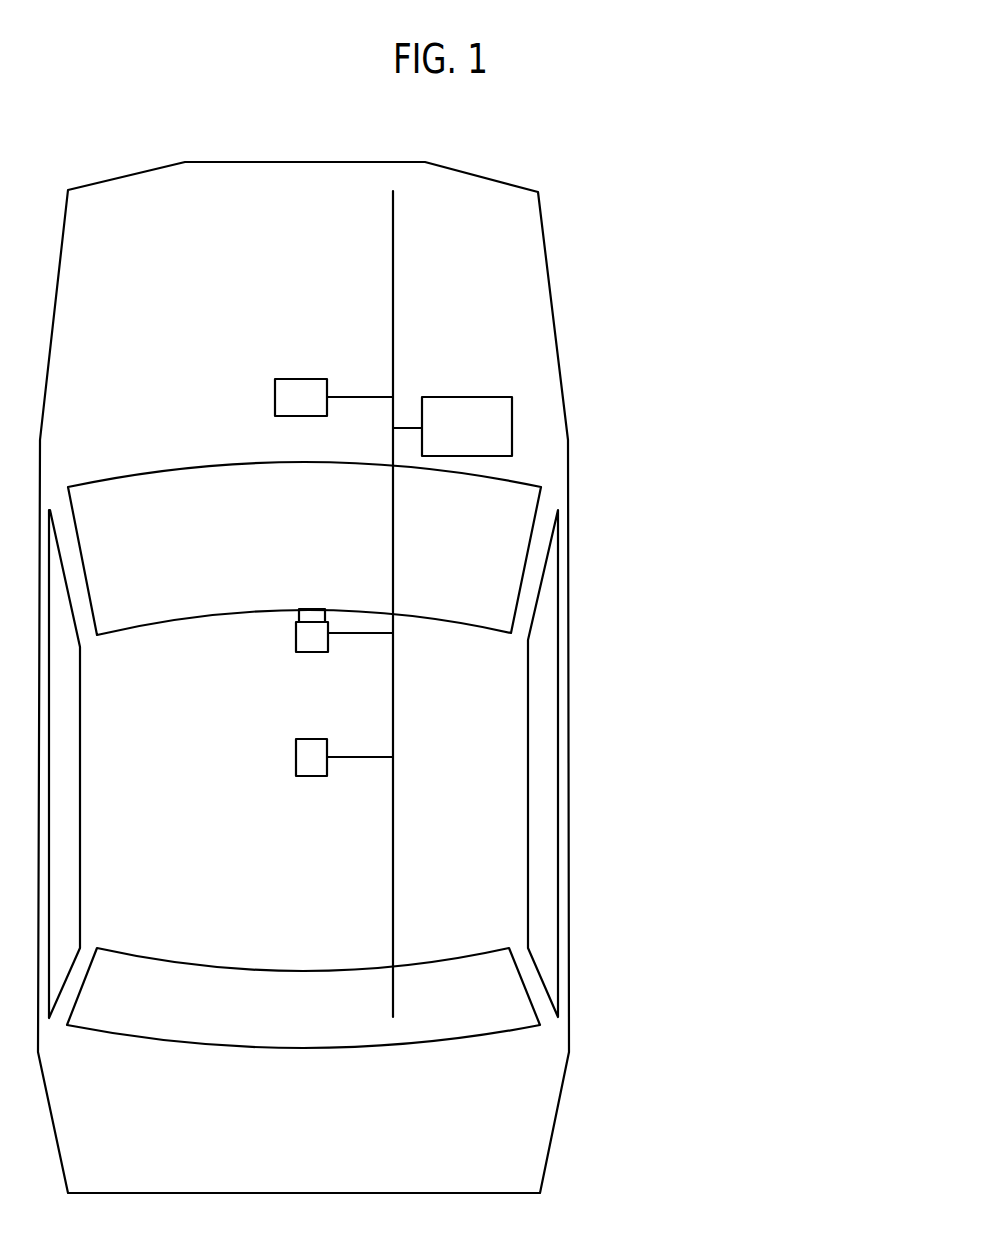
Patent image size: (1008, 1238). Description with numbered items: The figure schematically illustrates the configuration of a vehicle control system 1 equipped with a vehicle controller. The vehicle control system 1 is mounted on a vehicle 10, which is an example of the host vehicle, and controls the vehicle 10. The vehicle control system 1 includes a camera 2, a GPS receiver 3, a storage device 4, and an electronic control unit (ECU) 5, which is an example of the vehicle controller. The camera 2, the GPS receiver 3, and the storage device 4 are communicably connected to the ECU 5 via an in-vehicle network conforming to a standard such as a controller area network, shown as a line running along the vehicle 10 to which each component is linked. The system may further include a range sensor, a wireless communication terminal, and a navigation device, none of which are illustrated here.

The vehicle control system 1 is at (792, 1022).
The vehicle 10 is at (570, 1025).
The camera 2 is at (296, 640).
The GPS receiver 3 is at (296, 755).
The storage device 4 is at (275, 398).
The electronic control unit 5 is at (512, 430).